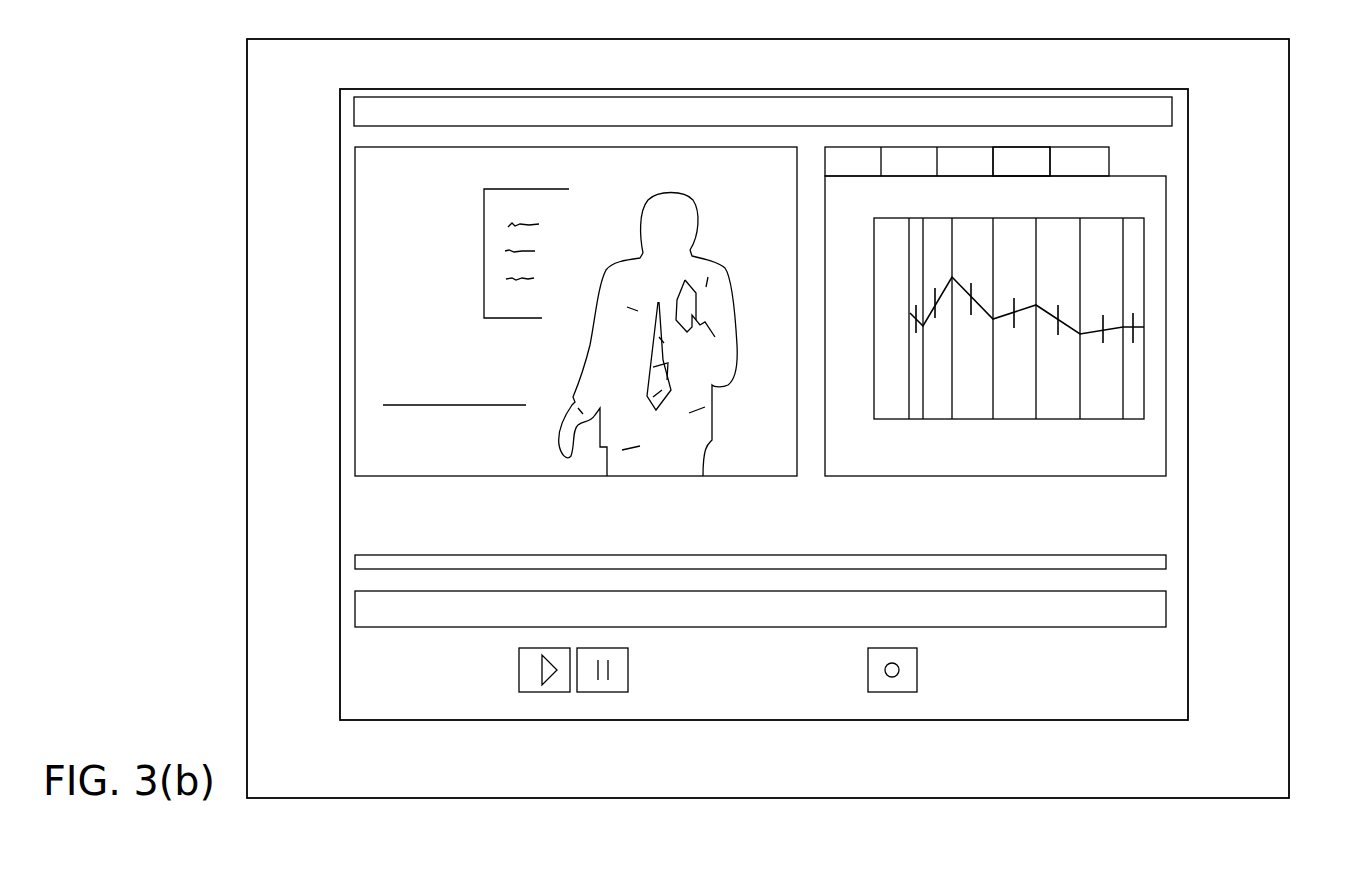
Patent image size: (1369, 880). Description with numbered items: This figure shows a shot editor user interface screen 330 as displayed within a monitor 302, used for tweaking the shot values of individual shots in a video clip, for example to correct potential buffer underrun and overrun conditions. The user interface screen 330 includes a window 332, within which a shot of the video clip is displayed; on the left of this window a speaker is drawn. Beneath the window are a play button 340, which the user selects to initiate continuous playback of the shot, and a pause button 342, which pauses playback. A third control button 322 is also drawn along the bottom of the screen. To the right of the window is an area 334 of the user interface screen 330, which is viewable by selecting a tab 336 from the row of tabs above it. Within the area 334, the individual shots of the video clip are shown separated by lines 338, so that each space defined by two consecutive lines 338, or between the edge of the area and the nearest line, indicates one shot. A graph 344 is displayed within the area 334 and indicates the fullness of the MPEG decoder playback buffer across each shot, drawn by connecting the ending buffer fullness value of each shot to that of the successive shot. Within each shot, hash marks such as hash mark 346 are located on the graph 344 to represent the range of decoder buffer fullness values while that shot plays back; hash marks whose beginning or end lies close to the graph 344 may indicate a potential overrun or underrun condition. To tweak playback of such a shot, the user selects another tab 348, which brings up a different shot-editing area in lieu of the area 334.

The monitor 302 is at (1289, 470).
The user interface screen 330 is at (1188, 528).
The window 332 is at (490, 476).
The area 334 is at (1000, 476).
The tab 336 is at (908, 146).
The tab 348 is at (1020, 146).
The lines 338 is at (909, 400).
The graph 344 is at (952, 277).
The hash mark 346 is at (1103, 315).
The play button 340 is at (545, 692).
The pause button 342 is at (608, 692).
The record button 322 is at (892, 692).